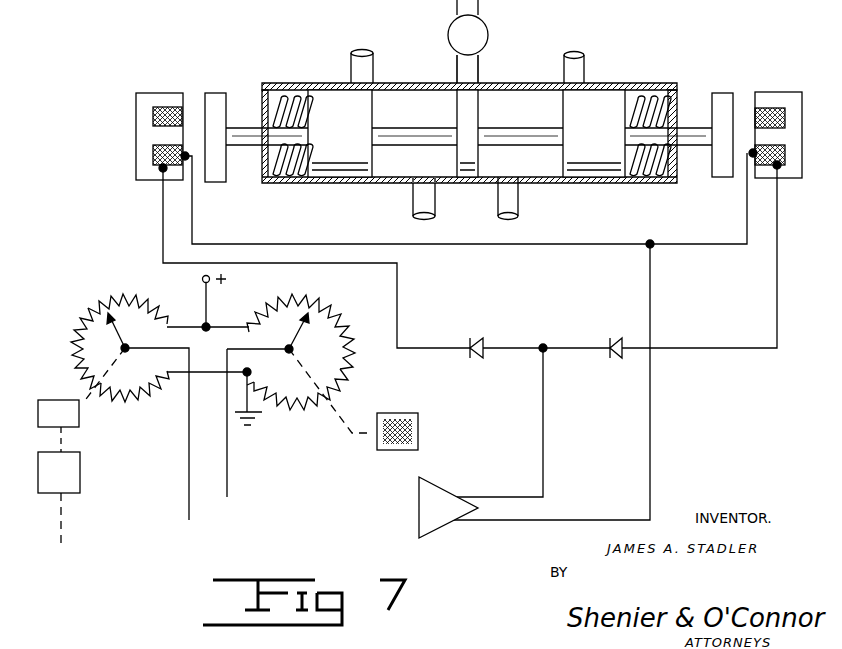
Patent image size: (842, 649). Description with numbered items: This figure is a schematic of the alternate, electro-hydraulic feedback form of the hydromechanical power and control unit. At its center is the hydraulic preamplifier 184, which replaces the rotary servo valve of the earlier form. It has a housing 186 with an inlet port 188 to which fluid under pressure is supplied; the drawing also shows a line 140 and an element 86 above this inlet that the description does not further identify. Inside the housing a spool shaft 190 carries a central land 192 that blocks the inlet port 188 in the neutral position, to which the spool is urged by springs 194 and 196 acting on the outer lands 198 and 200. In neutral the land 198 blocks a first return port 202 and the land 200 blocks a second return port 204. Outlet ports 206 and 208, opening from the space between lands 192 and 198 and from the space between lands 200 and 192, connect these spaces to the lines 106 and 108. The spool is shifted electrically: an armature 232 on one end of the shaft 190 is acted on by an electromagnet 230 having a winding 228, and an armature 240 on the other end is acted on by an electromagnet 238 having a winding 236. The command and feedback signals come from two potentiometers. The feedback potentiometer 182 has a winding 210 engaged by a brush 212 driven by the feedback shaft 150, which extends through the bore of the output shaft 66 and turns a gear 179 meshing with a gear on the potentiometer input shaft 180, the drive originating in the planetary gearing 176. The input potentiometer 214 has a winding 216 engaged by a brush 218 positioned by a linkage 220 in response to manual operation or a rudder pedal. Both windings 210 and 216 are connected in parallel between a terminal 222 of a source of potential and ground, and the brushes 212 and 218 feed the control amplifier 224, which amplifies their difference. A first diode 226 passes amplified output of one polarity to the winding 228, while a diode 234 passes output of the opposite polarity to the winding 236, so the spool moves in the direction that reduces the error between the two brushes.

The shaft 66 is at (60, 523).
The pressure indicator 86 is at (421, 27).
The line 106 is at (435, 210).
The line 108 is at (518, 210).
The pressure line 140 is at (444, 7).
The feedback shaft 150 is at (62, 433).
The planetary gearing 176 is at (80, 487).
The gear 179 is at (80, 423).
The input shaft 180 is at (77, 358).
The feedback potentiometer 182 is at (88, 290).
The hydraulic preamplifier 184 is at (628, 57).
The housing 186 is at (510, 83).
The inlet port 188 is at (462, 85).
The shaft 190 is at (515, 128).
The land 192 is at (456, 105).
The spring 194 is at (285, 97).
The spring 196 is at (662, 97).
The land 198 is at (342, 183).
The land 200 is at (599, 185).
The first return port 202 is at (370, 78).
The second return port 204 is at (585, 75).
The outlet port 206 is at (428, 183).
The outlet port 208 is at (508, 176).
The winding 210 is at (120, 290).
The brush 212 is at (82, 312).
The input potentiometer 214 is at (287, 417).
The winding 216 is at (345, 335).
The brush 218 is at (310, 315).
The linkage 220 is at (352, 408).
The terminal 222 is at (203, 279).
The control amplifier 224 is at (440, 487).
The first diode 226 is at (480, 340).
The winding 228 is at (165, 107).
The electromagnet 230 is at (136, 105).
The armature 232 is at (222, 93).
The diode 234 is at (615, 340).
The winding 236 is at (785, 118).
The electromagnet 238 is at (785, 92).
The armature 240 is at (733, 95).